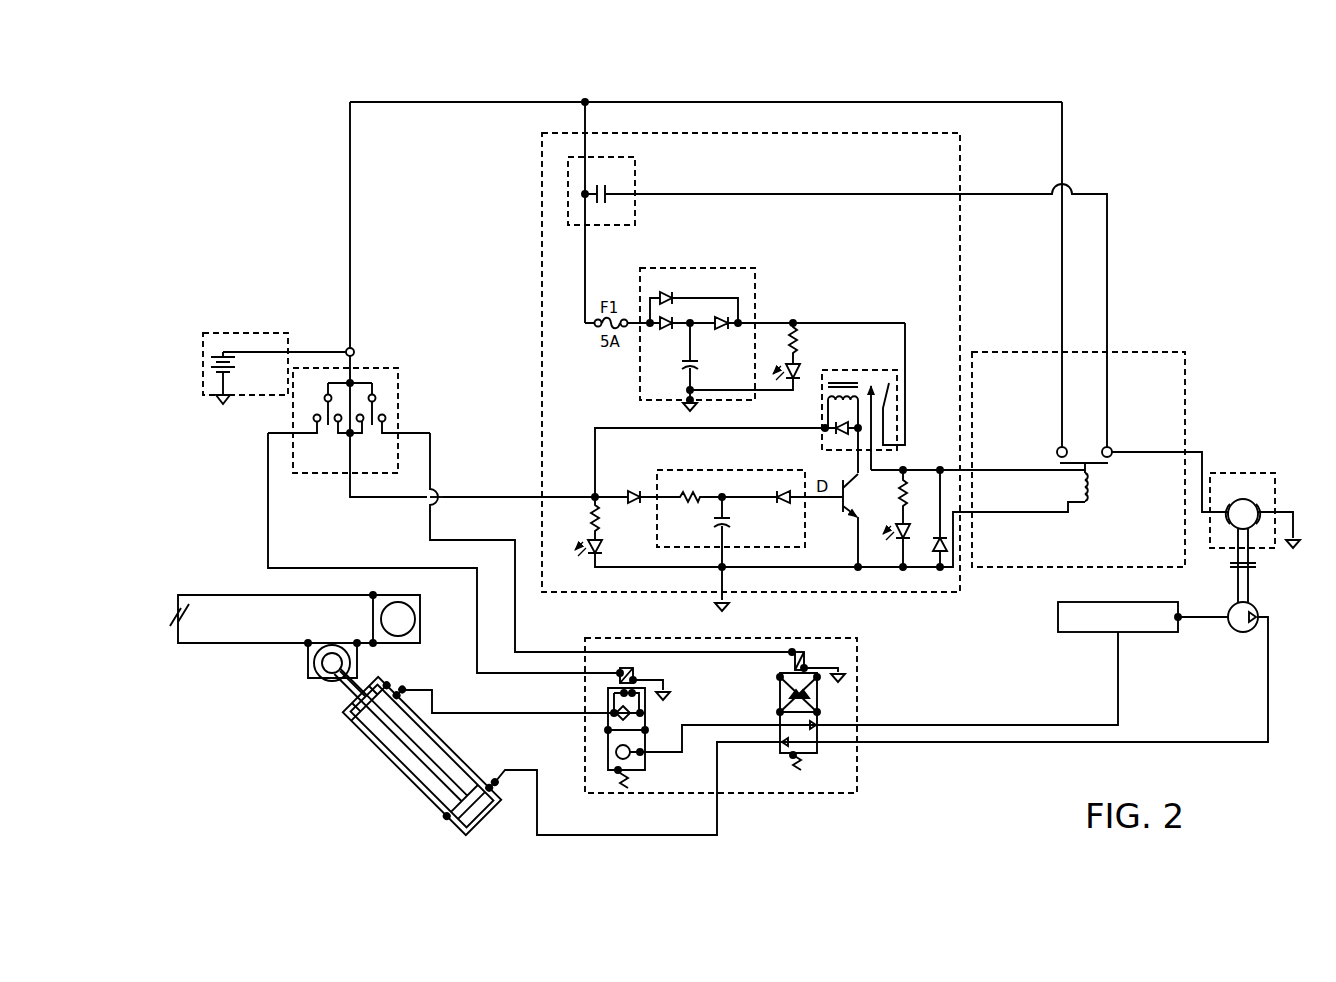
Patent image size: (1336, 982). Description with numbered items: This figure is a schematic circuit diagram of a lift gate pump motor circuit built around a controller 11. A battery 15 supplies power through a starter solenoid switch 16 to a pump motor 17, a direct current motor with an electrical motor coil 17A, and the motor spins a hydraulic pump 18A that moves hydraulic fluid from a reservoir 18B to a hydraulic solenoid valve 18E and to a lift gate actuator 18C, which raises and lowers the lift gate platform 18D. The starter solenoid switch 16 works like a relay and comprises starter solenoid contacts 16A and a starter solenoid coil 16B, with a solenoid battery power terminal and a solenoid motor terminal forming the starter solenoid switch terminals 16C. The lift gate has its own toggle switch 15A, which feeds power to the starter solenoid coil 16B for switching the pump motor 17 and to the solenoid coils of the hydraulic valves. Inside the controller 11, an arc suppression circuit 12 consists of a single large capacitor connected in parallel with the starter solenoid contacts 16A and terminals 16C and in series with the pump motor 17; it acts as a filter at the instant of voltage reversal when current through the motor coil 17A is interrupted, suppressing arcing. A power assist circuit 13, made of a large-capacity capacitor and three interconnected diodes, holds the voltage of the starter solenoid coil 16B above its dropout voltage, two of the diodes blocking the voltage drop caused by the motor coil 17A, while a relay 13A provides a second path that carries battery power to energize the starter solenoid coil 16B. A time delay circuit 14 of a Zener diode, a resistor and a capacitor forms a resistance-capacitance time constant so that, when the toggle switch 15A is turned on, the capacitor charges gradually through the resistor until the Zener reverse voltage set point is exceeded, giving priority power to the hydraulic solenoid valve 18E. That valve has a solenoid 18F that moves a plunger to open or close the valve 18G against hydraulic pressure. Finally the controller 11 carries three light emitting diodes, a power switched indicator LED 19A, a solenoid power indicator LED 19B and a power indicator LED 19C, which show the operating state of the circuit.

The controller 11 is at (540, 233).
The arc suppression circuit 12 is at (637, 173).
The power assist circuit 13 is at (758, 278).
The relay 13A is at (900, 373).
The time delay circuit 14 is at (656, 478).
The battery 15 is at (250, 333).
The toggle switch 15A is at (378, 366).
The starter solenoid switch 16 is at (1078, 431).
The starter solenoid contacts 16A is at (1103, 467).
The starter solenoid coil 16B is at (1097, 497).
The starter solenoid switch terminals 16C is at (1104, 445).
The pump motor 17 is at (1247, 471).
The electrical motor coil 17A is at (1264, 533).
The hydraulic pump 18A is at (1242, 634).
The reservoir 18B is at (1057, 616).
The lift gate actuator 18C is at (402, 775).
The lift gate platform 18D is at (258, 648).
The hydraulic solenoid valve 18E is at (664, 698).
The solenoid 18F is at (631, 664).
The valve 18G is at (775, 716).
The power switched indicator LED 19A is at (601, 560).
The solenoid power indicator LED 19B is at (906, 522).
The power indicator LED 19C is at (805, 368).